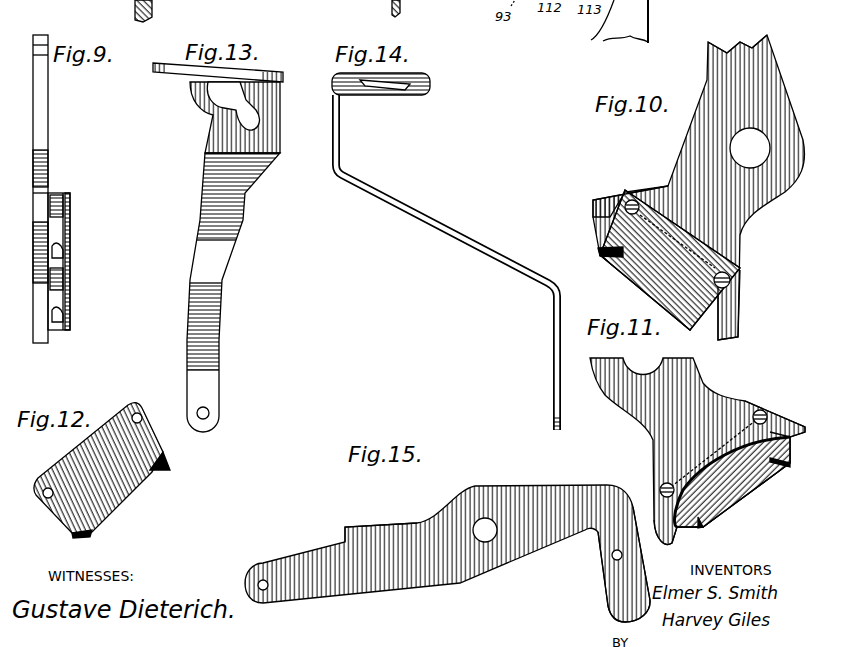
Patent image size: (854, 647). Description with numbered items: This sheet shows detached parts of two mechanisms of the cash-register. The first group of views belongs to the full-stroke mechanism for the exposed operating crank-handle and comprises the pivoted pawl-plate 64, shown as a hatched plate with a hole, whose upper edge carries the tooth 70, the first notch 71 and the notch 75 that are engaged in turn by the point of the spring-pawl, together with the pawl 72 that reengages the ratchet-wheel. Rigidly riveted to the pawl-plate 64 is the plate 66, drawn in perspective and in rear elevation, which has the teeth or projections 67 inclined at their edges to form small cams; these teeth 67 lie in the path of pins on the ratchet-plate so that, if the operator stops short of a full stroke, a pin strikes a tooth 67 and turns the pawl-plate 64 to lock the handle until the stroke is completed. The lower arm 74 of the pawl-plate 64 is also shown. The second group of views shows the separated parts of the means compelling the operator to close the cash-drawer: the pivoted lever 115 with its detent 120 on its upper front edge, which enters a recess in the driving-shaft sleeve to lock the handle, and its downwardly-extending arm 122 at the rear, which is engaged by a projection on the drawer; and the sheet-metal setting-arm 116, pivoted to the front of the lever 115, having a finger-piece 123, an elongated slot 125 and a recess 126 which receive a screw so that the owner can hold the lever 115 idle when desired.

In FIG. 9, the pawl-plate 64 is at (52, 189).
In FIG. 10, the pawl-plate 64 is at (698, 187).
In FIG. 11, the pawl-plate 64 is at (697, 451).
In FIG. 9, the plate 66 is at (72, 228).
In FIG. 12, the plate 66 is at (118, 482).
In FIG. 10, the plate 66 is at (640, 265).
In FIG. 11, the plate 66 is at (735, 490).
In FIG. 9, the teeth or projections 67 is at (66, 246).
In FIG. 12, the teeth or projections 67 is at (131, 496).
In FIG. 10, the teeth or projections 67 is at (653, 275).
In FIG. 11, the teeth or projections 67 is at (795, 466).
In FIG. 10, the tooth 70 is at (739, 39).
In FIG. 10, the first notch 71 is at (760, 45).
In FIG. 10, the pawl 72 is at (612, 200).
In FIG. 11, the pawl 72 is at (780, 418).
In FIG. 10, the lower arm of hammer 74 is at (745, 310).
In FIG. 11, the lower arm of hammer 74 is at (677, 541).
In FIG. 10, the notch 75 is at (708, 42).
In FIG. 15, the pivoted lever 115 is at (500, 491).
In FIG. 13, the setting-arm 116 is at (222, 252).
In FIG. 14, the setting-arm 116 is at (432, 228).
In FIG. 15, the detent 120 is at (352, 528).
In FIG. 15, the downwardly-extending arm 122 is at (612, 587).
In FIG. 13, the finger-piece 123 is at (163, 73).
In FIG. 14, the finger-piece 123 is at (420, 95).
In FIG. 13, the elongated slot 125 is at (233, 106).
In FIG. 13, the recess 126 is at (214, 95).